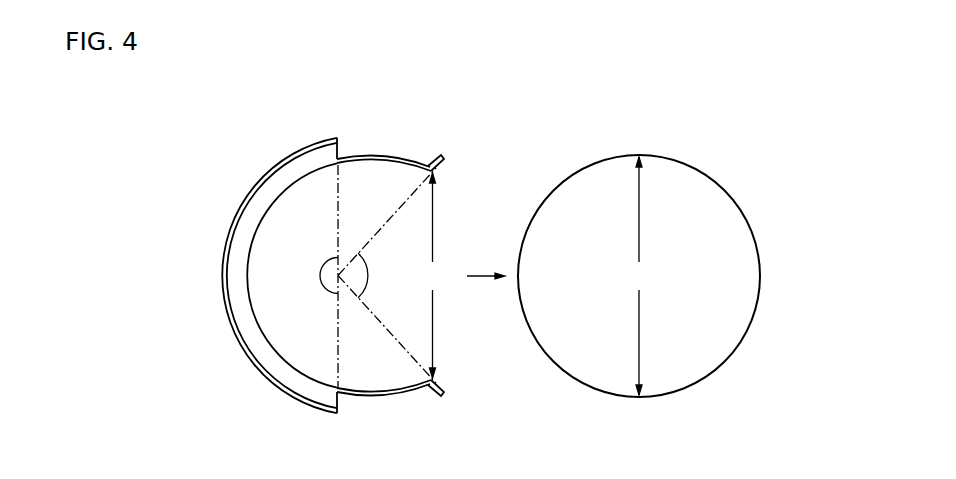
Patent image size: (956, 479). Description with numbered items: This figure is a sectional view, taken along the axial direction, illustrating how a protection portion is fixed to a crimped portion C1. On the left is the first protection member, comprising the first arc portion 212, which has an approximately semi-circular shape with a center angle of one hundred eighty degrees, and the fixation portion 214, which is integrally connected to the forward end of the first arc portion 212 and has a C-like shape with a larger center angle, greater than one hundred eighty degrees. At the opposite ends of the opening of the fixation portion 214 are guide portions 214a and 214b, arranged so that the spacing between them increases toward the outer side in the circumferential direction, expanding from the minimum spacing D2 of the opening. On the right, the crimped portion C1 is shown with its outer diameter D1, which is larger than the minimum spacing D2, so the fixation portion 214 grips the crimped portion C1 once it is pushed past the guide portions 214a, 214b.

The first arc portion 212 is at (243, 351).
The fixation portion 214 is at (382, 393).
The guide portion 214a is at (434, 156).
The guide portion 214b is at (438, 394).
The crimped portion C1 is at (751, 226).
The outer diameter of the crimped portion D1 is at (641, 276).
The minimum spacing of the opening D2 is at (436, 275).